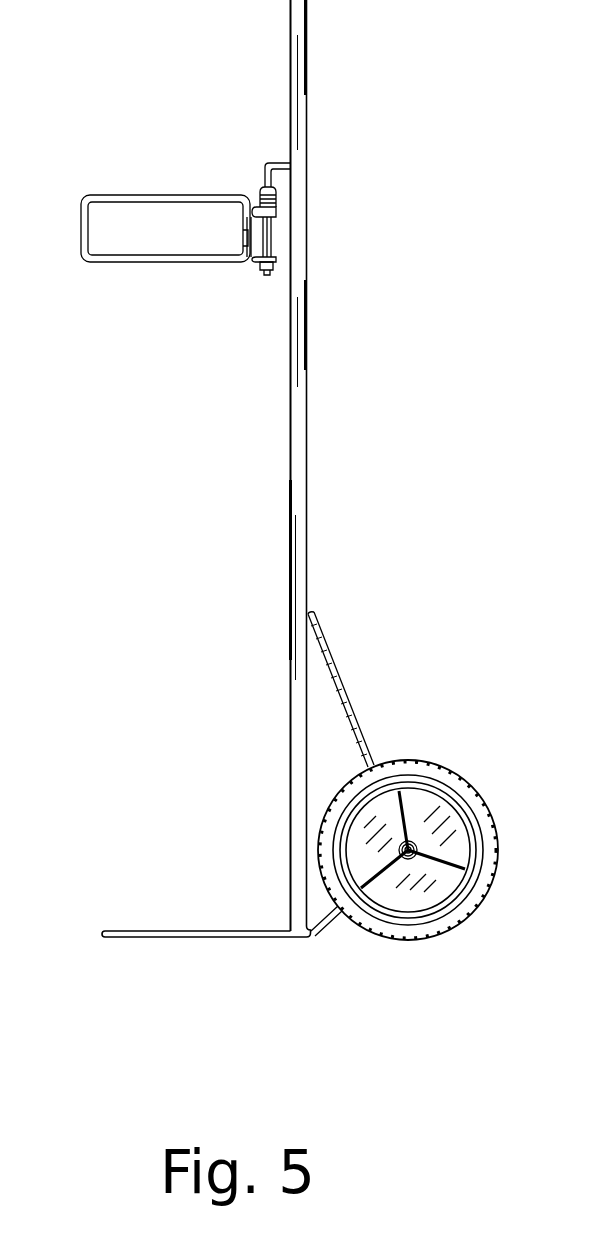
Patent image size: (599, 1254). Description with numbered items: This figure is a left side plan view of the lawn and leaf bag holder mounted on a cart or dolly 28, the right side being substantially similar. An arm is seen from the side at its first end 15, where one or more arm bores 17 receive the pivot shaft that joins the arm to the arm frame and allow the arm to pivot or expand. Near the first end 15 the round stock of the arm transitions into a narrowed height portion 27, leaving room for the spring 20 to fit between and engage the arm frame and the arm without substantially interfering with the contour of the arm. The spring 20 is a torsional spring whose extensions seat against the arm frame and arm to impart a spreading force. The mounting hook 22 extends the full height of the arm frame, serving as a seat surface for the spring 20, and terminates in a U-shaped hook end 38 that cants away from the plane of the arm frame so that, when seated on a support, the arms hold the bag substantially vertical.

The first end 15 is at (147, 287).
The arm bores 17 is at (252, 262).
The spring 20 is at (254, 200).
The mounting hooks 22 is at (280, 162).
The narrowed height portion 27 is at (246, 237).
The dolly 28 is at (303, 562).
The hook end 38 is at (287, 162).